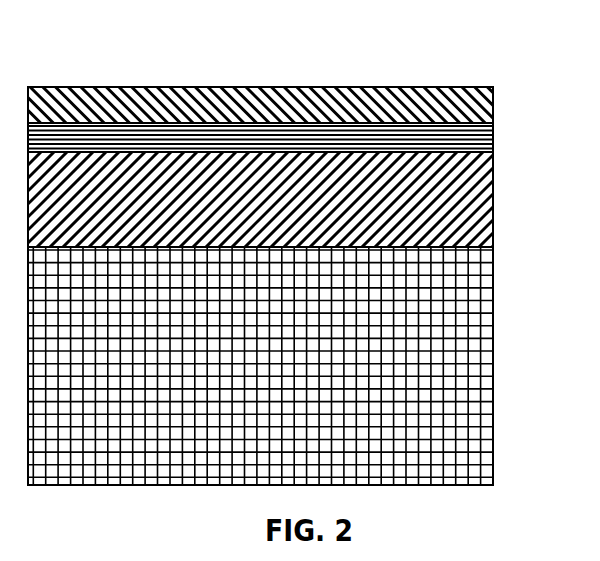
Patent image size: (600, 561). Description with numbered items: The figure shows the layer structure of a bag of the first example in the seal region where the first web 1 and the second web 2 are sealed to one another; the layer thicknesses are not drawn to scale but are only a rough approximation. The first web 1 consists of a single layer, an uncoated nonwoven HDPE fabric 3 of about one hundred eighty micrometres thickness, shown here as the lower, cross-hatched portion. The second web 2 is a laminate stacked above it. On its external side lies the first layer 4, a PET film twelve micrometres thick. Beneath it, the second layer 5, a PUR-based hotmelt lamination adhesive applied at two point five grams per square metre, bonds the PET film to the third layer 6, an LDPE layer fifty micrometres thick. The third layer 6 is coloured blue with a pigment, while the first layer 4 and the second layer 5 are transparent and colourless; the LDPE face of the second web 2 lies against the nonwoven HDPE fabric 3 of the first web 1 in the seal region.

The first web 1 is at (308, 366).
The second web 2 is at (293, 167).
The nonwoven HDPE fabric 3 is at (493, 247).
The first layer 4 is at (493, 123).
The second layer 5 is at (493, 152).
The third layer 6 is at (293, 199).